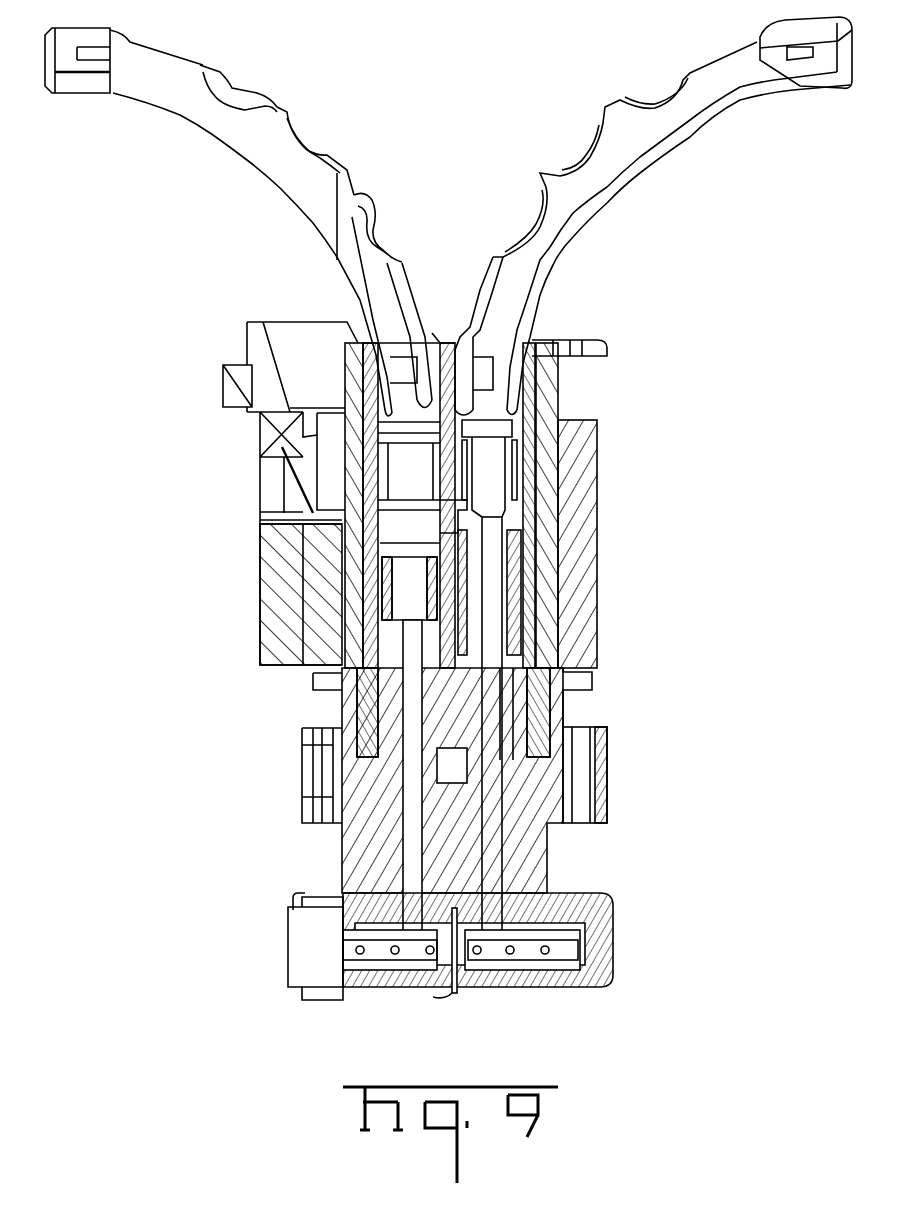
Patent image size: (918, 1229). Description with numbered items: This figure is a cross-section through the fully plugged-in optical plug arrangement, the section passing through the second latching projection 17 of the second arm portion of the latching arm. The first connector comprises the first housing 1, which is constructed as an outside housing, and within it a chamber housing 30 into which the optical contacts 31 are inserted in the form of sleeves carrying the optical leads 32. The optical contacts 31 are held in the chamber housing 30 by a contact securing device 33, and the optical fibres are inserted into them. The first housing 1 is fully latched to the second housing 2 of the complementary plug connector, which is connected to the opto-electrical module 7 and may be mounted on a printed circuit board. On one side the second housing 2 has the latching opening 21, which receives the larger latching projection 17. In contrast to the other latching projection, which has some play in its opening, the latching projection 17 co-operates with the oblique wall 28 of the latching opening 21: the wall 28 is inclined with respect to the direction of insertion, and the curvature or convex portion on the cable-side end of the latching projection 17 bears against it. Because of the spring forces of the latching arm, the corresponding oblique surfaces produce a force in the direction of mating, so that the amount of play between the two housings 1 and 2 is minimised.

The first housing 1 is at (552, 531).
The second housing 2 is at (578, 599).
The opto-electrical module 7 is at (373, 810).
The latching projection 17 is at (293, 470).
The latching opening 21 is at (270, 495).
The wall 28 is at (272, 442).
The chamber housing 30 is at (545, 497).
The optical contacts 31 is at (493, 467).
The optical leads 32 is at (517, 283).
The contact securing device 33 is at (370, 624).